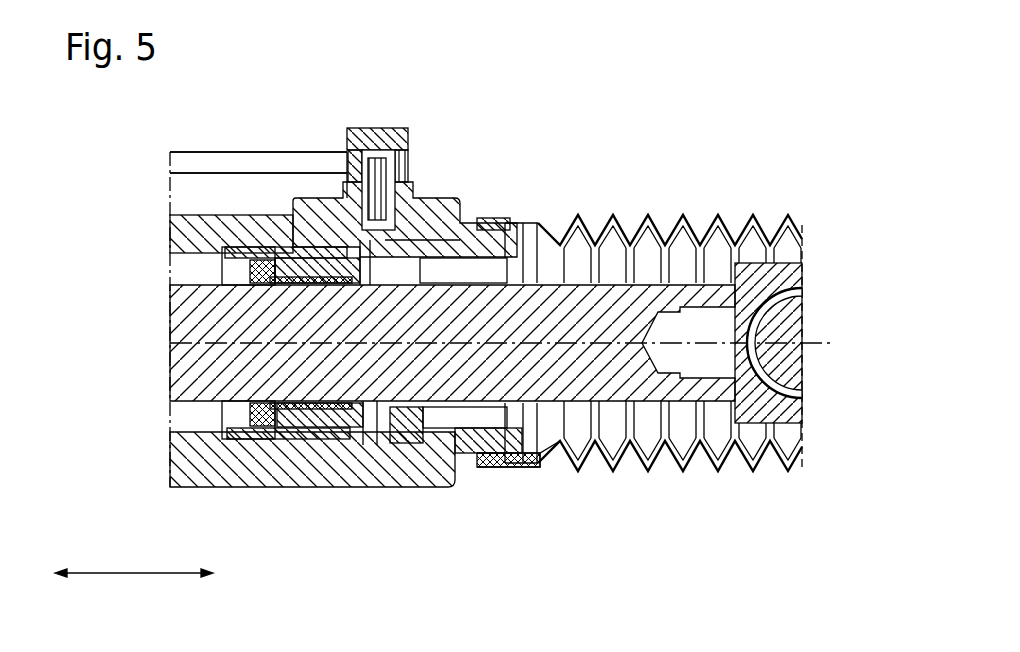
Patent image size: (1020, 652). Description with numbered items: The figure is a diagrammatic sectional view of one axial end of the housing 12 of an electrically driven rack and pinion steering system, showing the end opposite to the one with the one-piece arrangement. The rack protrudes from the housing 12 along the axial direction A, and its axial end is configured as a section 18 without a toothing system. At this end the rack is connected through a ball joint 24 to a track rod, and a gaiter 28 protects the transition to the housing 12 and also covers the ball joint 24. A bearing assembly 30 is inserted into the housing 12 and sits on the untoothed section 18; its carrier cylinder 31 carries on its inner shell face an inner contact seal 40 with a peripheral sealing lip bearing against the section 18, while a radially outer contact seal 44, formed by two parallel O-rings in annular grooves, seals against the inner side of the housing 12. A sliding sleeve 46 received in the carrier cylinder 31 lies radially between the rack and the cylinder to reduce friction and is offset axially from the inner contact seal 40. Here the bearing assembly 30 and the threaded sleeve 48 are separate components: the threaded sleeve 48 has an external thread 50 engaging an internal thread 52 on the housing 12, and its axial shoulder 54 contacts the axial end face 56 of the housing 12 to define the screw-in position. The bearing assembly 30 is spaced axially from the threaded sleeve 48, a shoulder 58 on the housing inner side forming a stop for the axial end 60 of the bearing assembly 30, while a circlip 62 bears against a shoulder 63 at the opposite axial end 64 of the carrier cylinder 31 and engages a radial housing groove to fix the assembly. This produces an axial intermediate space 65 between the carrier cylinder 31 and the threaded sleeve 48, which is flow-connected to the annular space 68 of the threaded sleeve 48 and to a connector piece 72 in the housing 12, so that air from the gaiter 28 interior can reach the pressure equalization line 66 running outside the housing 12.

The housing 12 is at (187, 470).
The section without a toothing system 18 is at (612, 315).
The ball joint 24 is at (780, 312).
The gaiter 28 is at (797, 215).
The bearing assembly 30 is at (333, 232).
The carrier cylinder 31 is at (258, 257).
The inner contact seal 40 is at (222, 263).
The radially outer contact seal 44 is at (280, 437).
The sliding sleeve 46 is at (305, 253).
The threaded sleeve 48 is at (505, 220).
The external thread 50 is at (502, 513).
The internal thread 52 is at (445, 483).
The axial shoulder 54 is at (515, 488).
The axial end face 56 is at (470, 455).
The shoulder 58 is at (222, 432).
The axial end of the bearing assembly 60 is at (151, 438).
The circlip 62 is at (350, 433).
The shoulder 63 is at (372, 440).
The axial end of the carrier cylinder 64 is at (388, 440).
The axial intermediate space 65 is at (380, 262).
The pressure equalization line 66 is at (205, 158).
The annular space 68 is at (493, 417).
The connector piece 72 is at (390, 133).
The axial direction A is at (115, 573).